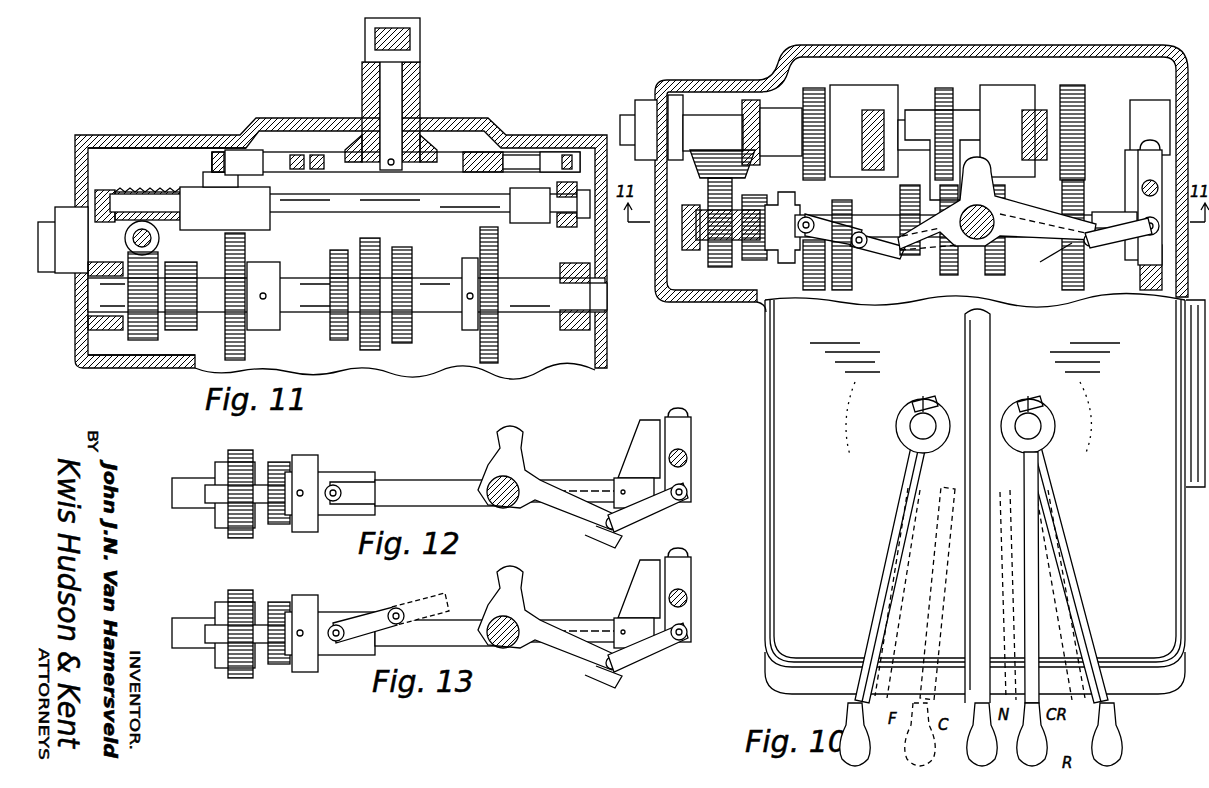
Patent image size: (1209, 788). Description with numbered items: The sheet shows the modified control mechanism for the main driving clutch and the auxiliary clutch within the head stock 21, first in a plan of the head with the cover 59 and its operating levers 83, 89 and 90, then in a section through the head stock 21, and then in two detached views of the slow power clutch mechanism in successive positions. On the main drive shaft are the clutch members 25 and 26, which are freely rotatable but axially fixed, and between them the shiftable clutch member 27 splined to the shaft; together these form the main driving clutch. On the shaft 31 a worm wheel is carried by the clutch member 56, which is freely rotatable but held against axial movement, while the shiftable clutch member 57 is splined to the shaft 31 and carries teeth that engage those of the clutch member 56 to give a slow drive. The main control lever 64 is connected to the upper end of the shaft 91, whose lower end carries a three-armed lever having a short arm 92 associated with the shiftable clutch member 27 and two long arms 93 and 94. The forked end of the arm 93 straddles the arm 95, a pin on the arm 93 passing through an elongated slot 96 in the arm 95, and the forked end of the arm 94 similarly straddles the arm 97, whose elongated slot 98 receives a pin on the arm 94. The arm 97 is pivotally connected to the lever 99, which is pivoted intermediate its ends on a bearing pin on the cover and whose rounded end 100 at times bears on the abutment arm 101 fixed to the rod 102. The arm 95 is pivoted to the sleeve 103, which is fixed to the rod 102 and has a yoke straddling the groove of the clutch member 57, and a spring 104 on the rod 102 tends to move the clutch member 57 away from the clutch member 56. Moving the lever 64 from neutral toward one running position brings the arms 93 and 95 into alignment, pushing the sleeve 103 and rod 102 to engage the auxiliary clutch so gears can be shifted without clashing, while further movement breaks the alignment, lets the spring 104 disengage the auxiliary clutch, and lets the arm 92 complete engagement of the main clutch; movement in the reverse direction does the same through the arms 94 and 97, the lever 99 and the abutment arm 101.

In FIG. 11, the gear housing 21 is at (602, 362).
In FIG. 10, the gear housing 21 is at (1150, 53).
In FIG. 10, the clutch member 25 is at (850, 96).
In FIG. 10, the clutch member 26 is at (1008, 96).
In FIG. 10, the shiftable clutch member 27 is at (952, 96).
In FIG. 11, the shaft 31 is at (296, 313).
In FIG. 11, the clutch member 56 is at (152, 342).
In FIG. 10, the clutch member 56 is at (722, 270).
In FIG. 12, the clutch member 56 is at (252, 540).
In FIG. 13, the clutch member 56 is at (241, 649).
In FIG. 11, the shiftable clutch member 57 is at (183, 331).
In FIG. 10, the shiftable clutch member 57 is at (760, 196).
In FIG. 12, the shiftable clutch member 57 is at (284, 528).
In FIG. 13, the shiftable clutch member 57 is at (281, 654).
In FIG. 11, the cover 59 is at (162, 136).
In FIG. 10, the cover 59 is at (766, 592).
In FIG. 10, the main control lever 64 is at (985, 376).
In FIG. 10, the operating lever 83 is at (1060, 568).
In FIG. 10, the operating lever 89 is at (1040, 604).
In FIG. 10, the operating lever 90 is at (897, 482).
In FIG. 11, the shaft 91 is at (396, 100).
In FIG. 10, the shaft 91 is at (973, 242).
In FIG. 12, the shaft 91 is at (500, 505).
In FIG. 13, the shaft 91 is at (503, 652).
In FIG. 10, the short arm 92 is at (972, 165).
In FIG. 12, the short arm 92 is at (518, 440).
In FIG. 13, the short arm 92 is at (548, 603).
In FIG. 11, the long arm 93 is at (344, 152).
In FIG. 10, the long arm 93 is at (928, 252).
In FIG. 12, the long arm 93 is at (450, 480).
In FIG. 13, the long arm 93 is at (437, 614).
In FIG. 11, the long arm 94 is at (449, 152).
In FIG. 10, the long arm 94 is at (1020, 240).
In FIG. 12, the long arm 94 is at (548, 482).
In FIG. 13, the long arm 94 is at (587, 636).
In FIG. 11, the arm 95 is at (246, 150).
In FIG. 10, the arm 95 is at (838, 248).
In FIG. 12, the arm 95 is at (362, 482).
In FIG. 13, the arm 95 is at (358, 623).
In FIG. 10, the elongated slot 96 is at (895, 262).
In FIG. 11, the arm 97 is at (540, 152).
In FIG. 10, the arm 97 is at (1100, 252).
In FIG. 12, the arm 97 is at (618, 535).
In FIG. 13, the arm 97 is at (648, 656).
In FIG. 10, the elongated slot 98 is at (1040, 262).
In FIG. 10, the lever 99 is at (1146, 200).
In FIG. 10, the rounded end 100 is at (1149, 150).
In FIG. 12, the rounded end 100 is at (679, 417).
In FIG. 13, the rounded end 100 is at (688, 584).
In FIG. 11, the abutment arm 101 is at (526, 223).
In FIG. 10, the abutment arm 101 is at (1112, 200).
In FIG. 12, the abutment arm 101 is at (636, 452).
In FIG. 13, the abutment arm 101 is at (637, 600).
In FIG. 11, the rod 102 is at (392, 212).
In FIG. 10, the rod 102 is at (1003, 216).
In FIG. 12, the rod 102 is at (590, 480).
In FIG. 13, the rod 102 is at (576, 612).
In FIG. 11, the sleeve 103 is at (266, 226).
In FIG. 10, the sleeve 103 is at (770, 258).
In FIG. 12, the sleeve 103 is at (345, 516).
In FIG. 13, the sleeve 103 is at (330, 644).
In FIG. 11, the spring 104 is at (146, 190).
In FIG. 10, the spring 104 is at (698, 206).